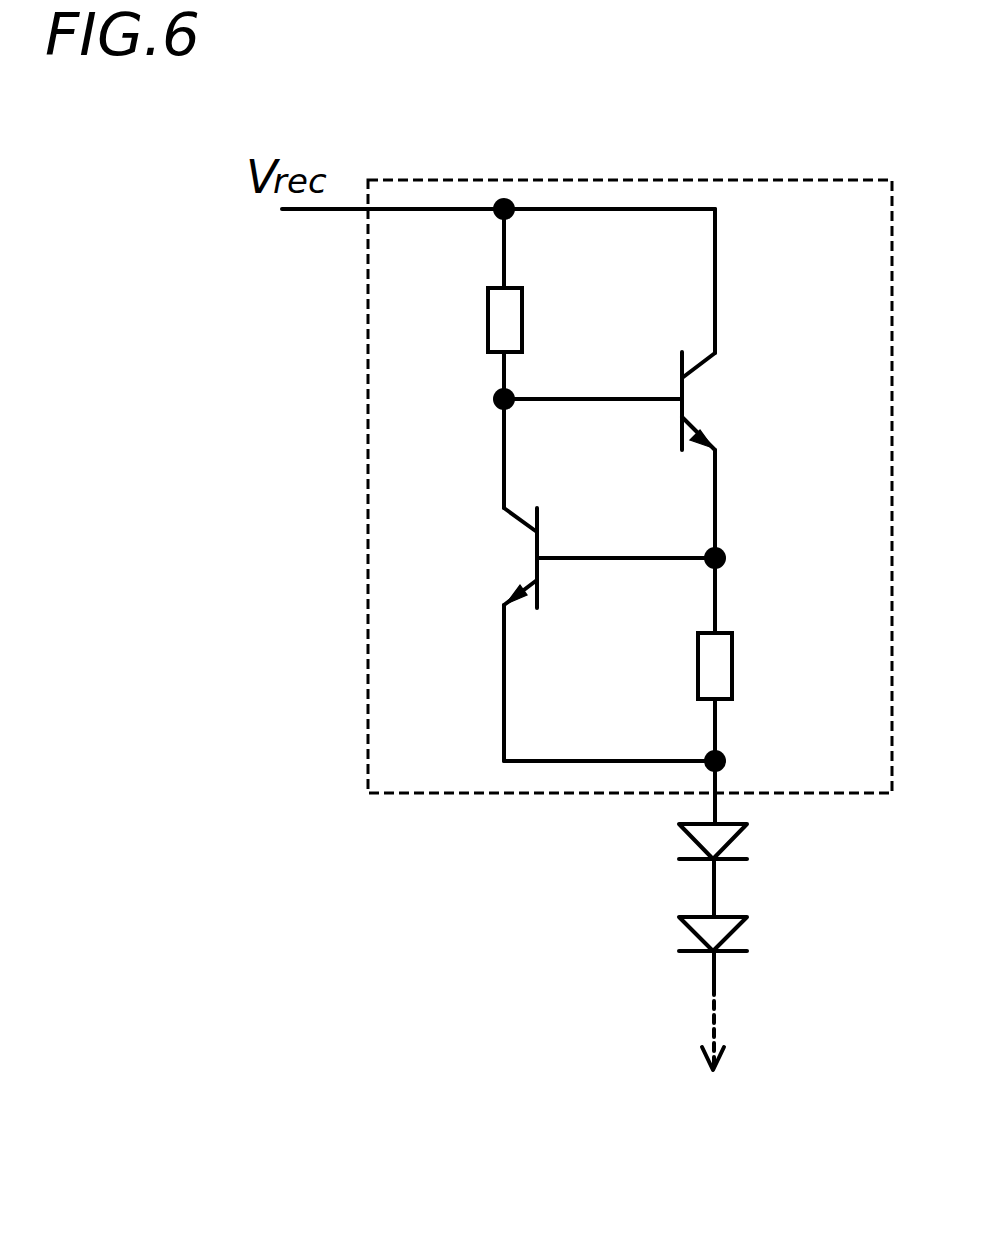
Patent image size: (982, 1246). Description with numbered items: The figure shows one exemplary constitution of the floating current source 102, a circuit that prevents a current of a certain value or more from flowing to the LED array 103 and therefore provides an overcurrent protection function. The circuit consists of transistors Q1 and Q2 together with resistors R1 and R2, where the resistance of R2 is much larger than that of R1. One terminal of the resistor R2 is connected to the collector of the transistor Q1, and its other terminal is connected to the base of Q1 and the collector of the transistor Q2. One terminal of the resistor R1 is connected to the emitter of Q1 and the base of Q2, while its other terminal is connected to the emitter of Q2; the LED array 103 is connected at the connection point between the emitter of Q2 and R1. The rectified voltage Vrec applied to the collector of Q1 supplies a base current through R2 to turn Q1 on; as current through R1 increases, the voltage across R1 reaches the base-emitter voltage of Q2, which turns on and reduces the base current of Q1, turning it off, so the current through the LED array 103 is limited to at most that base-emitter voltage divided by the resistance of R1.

The floating current source 102 is at (358, 442).
The LED array 103 is at (767, 824).
The resistor R1 is at (754, 666).
The resistor R2 is at (470, 320).
The transistor Q1 is at (731, 401).
The transistor Q2 is at (492, 558).